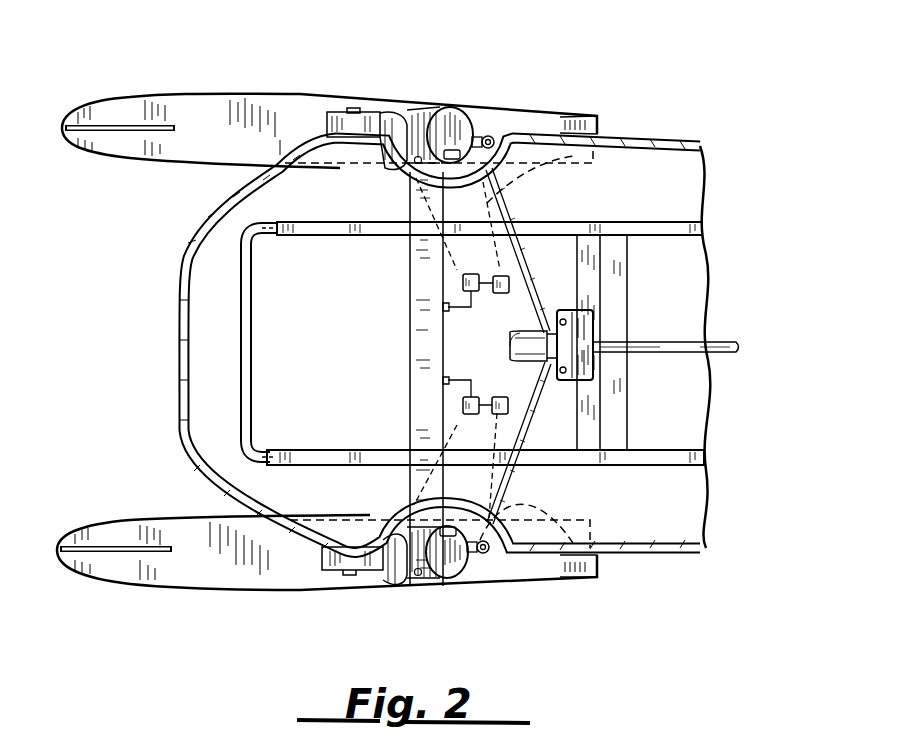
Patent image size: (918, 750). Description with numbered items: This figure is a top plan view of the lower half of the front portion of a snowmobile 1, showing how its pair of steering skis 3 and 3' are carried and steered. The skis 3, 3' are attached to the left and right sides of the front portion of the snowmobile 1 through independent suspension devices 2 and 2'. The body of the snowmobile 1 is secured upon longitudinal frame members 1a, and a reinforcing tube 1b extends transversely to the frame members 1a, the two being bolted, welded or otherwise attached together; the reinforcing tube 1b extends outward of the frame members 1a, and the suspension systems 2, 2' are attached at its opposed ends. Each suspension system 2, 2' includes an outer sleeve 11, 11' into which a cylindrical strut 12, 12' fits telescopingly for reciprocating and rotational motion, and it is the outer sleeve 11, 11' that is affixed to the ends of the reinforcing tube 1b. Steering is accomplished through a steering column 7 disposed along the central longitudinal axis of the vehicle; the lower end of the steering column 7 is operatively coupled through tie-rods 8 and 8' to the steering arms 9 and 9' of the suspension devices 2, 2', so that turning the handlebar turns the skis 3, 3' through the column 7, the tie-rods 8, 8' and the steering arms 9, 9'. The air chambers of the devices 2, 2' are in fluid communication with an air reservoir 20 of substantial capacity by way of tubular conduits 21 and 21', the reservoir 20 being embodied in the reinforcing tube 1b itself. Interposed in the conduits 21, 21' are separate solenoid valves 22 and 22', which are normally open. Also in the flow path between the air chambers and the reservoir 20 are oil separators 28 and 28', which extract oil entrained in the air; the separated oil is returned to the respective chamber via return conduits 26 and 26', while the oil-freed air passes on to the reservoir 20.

The snowmobile 1 is at (672, 134).
The frame 1a is at (678, 223).
The reinforcing tube 1b is at (417, 330).
The independent suspension device 2 is at (392, 592).
The independent suspension device 2' is at (399, 102).
The steering ski 3 is at (327, 579).
The steering ski 3' is at (329, 102).
The steering column 7 is at (725, 342).
The tie-rod 8 is at (502, 565).
The tie-rod 8' is at (508, 119).
The steering arm 9 is at (488, 594).
The steering arm 9' is at (495, 92).
The outer sleeve 11 is at (437, 594).
The outer sleeve 11' is at (443, 95).
The cylindrical strut 12 is at (347, 588).
The cylindrical strut 12' is at (357, 91).
The air reservoir 20 is at (410, 353).
The tubular conduit 21 is at (589, 585).
The tubular conduit 21' is at (602, 104).
The solenoid valve 22 is at (545, 443).
The solenoid valve 22' is at (546, 250).
The return conduit 26 is at (440, 513).
The return conduit 26' is at (439, 178).
The oil separator 28 is at (420, 441).
The oil separator 28' is at (431, 244).